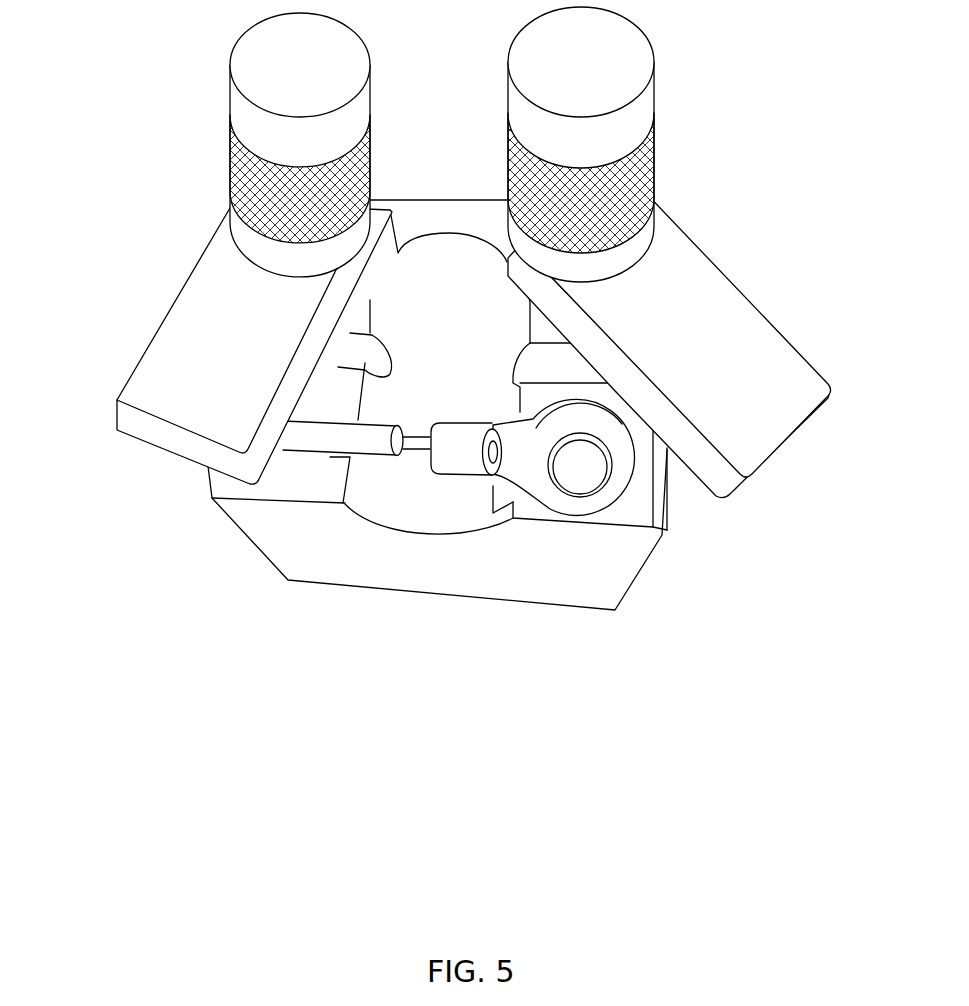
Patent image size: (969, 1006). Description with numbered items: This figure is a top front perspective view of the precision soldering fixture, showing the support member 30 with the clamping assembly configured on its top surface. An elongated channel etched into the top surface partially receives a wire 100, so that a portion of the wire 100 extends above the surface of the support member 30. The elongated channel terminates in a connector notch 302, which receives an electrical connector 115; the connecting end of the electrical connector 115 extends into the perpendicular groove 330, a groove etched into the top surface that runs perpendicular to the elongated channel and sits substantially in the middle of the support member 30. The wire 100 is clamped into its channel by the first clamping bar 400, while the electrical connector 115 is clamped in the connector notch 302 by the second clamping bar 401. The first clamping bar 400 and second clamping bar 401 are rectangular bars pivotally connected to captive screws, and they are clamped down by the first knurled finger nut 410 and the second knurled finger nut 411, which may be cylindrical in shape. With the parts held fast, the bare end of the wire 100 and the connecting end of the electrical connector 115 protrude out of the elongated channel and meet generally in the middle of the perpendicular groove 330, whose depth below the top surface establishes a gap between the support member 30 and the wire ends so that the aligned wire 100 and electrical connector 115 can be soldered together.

The support member 30 is at (277, 571).
The wire 100 is at (313, 442).
The electrical connector 115 is at (583, 512).
The connector notch 302 is at (640, 497).
The perpendicular groove 330 is at (433, 518).
The first clamping bar 400 is at (117, 396).
The second clamping bar 401 is at (804, 430).
The first knurled finger nut 410 is at (237, 46).
The second knurled finger nut 411 is at (657, 97).